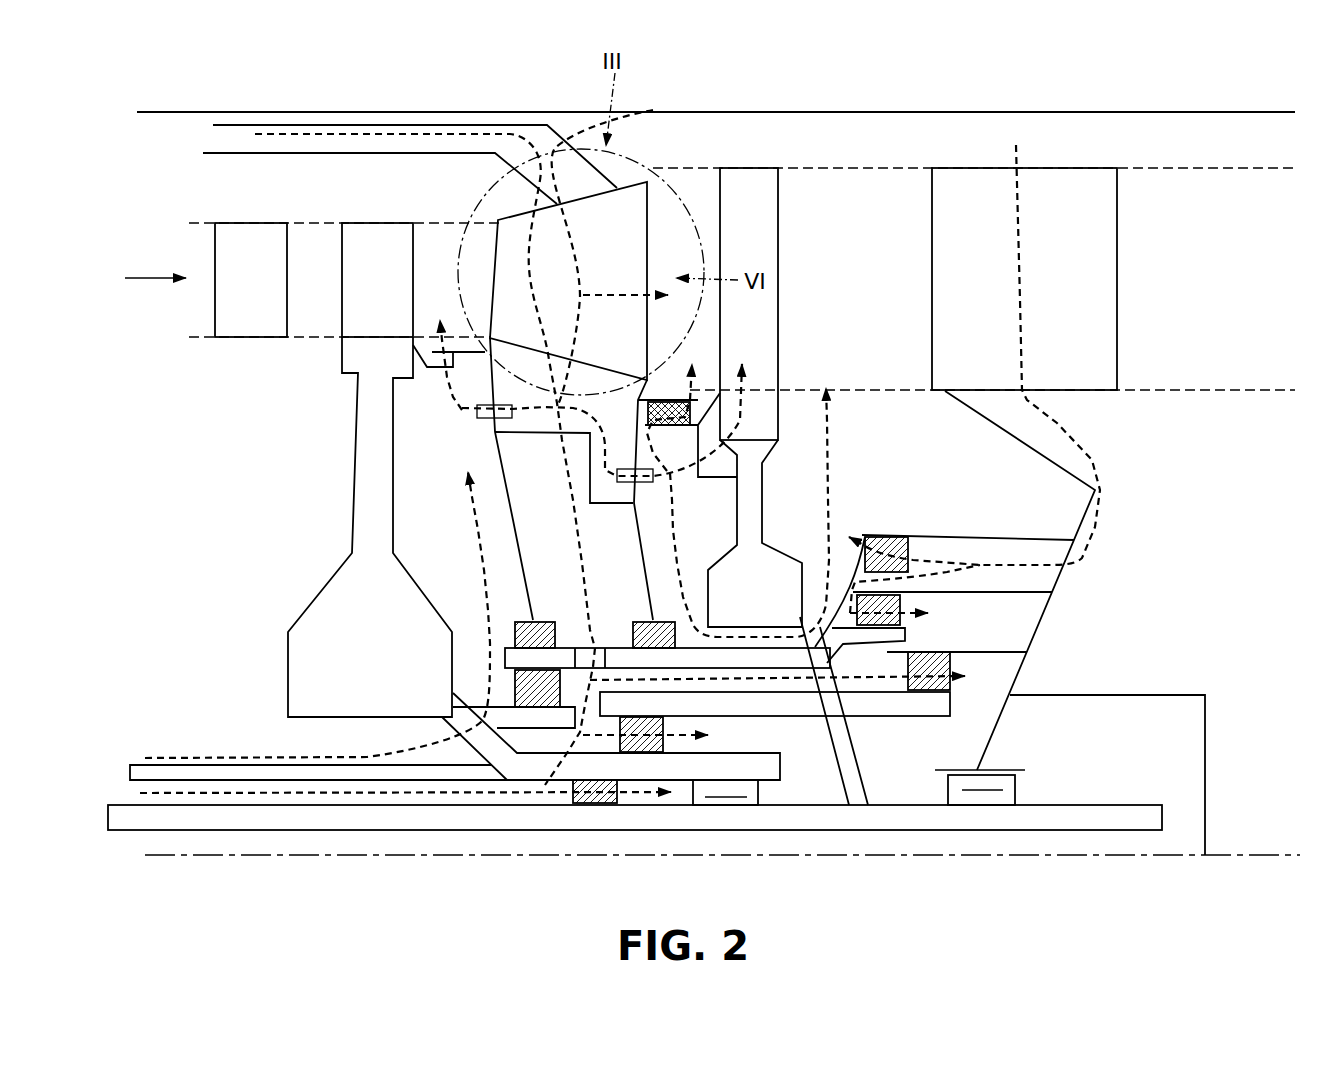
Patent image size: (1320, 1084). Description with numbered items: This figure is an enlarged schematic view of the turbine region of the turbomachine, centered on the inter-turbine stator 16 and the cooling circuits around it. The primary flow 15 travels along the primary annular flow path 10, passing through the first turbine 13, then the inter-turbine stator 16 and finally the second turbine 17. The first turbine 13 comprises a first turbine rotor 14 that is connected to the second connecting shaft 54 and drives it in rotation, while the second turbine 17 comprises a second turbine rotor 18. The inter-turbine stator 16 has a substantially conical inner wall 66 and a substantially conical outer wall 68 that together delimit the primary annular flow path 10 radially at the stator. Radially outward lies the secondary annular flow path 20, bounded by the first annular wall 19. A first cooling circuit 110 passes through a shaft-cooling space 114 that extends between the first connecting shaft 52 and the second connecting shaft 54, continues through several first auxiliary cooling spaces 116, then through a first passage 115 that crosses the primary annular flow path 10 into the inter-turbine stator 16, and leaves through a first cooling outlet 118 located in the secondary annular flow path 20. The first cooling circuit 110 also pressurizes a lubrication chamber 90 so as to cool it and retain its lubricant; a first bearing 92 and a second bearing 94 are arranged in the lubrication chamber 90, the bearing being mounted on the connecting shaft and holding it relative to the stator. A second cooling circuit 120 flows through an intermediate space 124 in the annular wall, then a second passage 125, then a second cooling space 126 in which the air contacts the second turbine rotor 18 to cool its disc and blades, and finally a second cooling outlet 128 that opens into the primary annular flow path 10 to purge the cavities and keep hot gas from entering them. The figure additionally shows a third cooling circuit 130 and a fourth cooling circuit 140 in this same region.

The primary annular flow path 10 is at (850, 279).
The first turbine 13 is at (347, 213).
The first turbine rotor 14 is at (325, 492).
The primary flow 15 is at (142, 279).
The inter-turbine stator 16 is at (633, 177).
The second turbine 17 is at (752, 163).
The second turbine rotor 18 is at (783, 493).
The first annular wall 19 is at (1217, 108).
The secondary annular flow path 20 is at (1010, 456).
The first connecting shaft 52 is at (1127, 820).
The second connecting shaft 54 is at (183, 776).
The inner wall 66 is at (500, 340).
The outer wall 68 is at (470, 334).
The lubrication chamber 90 is at (907, 781).
The first bearing 92 is at (983, 800).
The second bearing 94 is at (727, 800).
The first cooling circuit 110 is at (573, 552).
The shaft-cooling space 114 is at (252, 807).
The first passage 115 is at (525, 250).
The first auxiliary cooling space 116 is at (975, 672).
The first cooling outlet 118 is at (658, 108).
The second cooling circuit 120 is at (260, 124).
The intermediate space 124 is at (330, 121).
The second passage 125 is at (590, 243).
The second cooling space 126 is at (687, 484).
The second cooling outlet 128 is at (702, 360).
The third cooling circuit 130 is at (210, 748).
The fourth cooling circuit 140 is at (1112, 467).